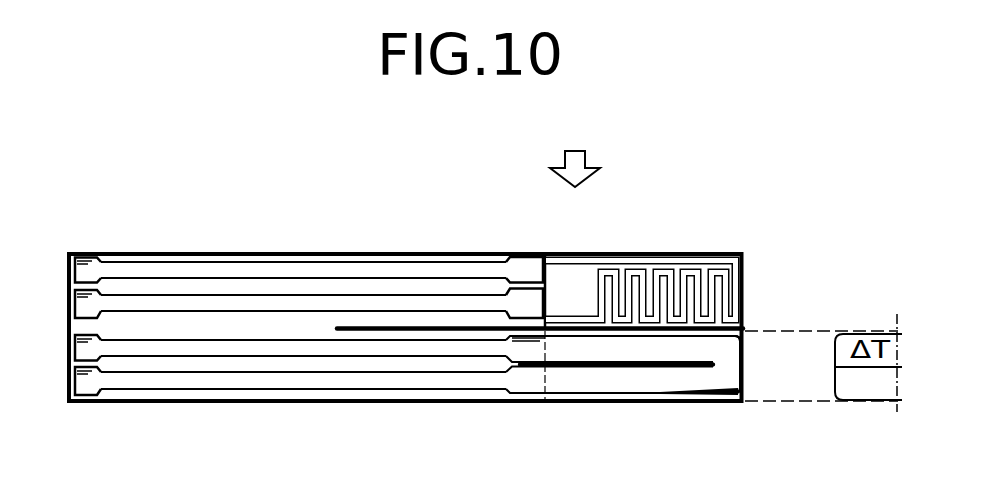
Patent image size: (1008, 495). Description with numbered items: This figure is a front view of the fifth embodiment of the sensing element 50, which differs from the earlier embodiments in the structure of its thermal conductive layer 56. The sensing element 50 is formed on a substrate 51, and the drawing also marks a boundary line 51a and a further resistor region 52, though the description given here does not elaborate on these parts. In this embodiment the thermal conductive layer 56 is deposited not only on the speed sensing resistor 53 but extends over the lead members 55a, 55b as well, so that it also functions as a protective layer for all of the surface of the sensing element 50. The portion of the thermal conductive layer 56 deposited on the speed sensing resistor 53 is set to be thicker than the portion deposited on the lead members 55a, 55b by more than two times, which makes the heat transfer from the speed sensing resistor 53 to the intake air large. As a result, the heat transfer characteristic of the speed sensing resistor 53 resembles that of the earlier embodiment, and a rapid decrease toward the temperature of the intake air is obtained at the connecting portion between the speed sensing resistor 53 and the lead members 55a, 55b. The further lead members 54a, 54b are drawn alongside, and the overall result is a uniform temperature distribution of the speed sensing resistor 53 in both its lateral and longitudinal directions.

The sensing element 50 is at (328, 252).
The substrate 51 is at (468, 396).
The boundary line of substrate 51a is at (743, 330).
The temperature sensing resistor element 52 is at (745, 265).
The speed sensing resistor 53 is at (625, 364).
The lead conductor 54a is at (160, 302).
The lead conductor 54b is at (239, 268).
The lead member 55a is at (172, 381).
The lead member 55b is at (258, 350).
The thermal conductive layer 56 is at (668, 382).